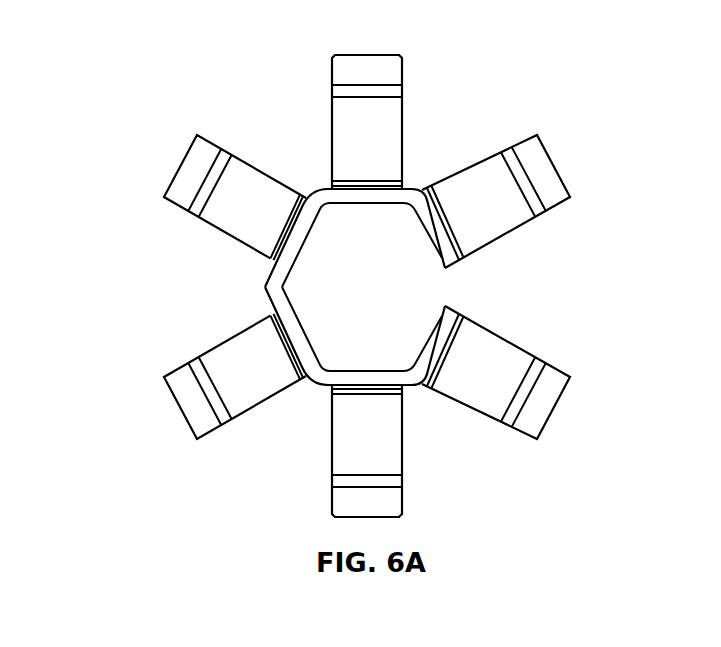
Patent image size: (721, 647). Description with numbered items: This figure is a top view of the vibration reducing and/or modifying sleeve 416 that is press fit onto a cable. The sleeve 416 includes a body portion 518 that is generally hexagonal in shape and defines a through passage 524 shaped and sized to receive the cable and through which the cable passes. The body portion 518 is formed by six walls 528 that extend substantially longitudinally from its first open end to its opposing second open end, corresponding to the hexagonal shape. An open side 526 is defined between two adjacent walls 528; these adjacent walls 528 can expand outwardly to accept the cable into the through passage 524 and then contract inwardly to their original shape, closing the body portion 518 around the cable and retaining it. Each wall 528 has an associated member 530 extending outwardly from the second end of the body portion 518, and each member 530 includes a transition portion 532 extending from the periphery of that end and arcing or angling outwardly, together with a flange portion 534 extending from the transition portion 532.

The sleeve 416 is at (134, 86).
The body portion 518 is at (265, 288).
The through passage 524 is at (385, 292).
The open side 526 is at (455, 287).
The walls 528 is at (362, 195).
The member 530 is at (479, 408).
The transition portion 532 is at (473, 203).
The flange portion 534 is at (545, 178).